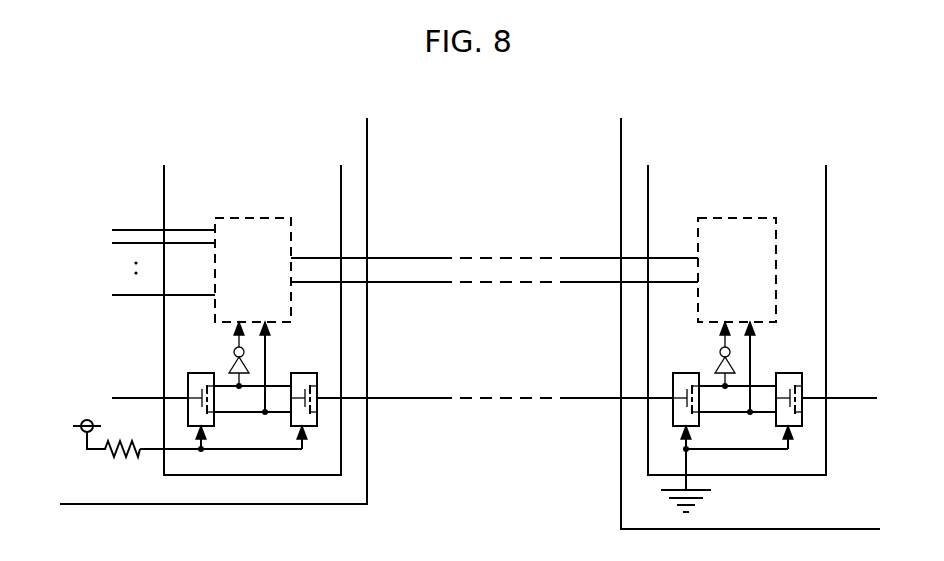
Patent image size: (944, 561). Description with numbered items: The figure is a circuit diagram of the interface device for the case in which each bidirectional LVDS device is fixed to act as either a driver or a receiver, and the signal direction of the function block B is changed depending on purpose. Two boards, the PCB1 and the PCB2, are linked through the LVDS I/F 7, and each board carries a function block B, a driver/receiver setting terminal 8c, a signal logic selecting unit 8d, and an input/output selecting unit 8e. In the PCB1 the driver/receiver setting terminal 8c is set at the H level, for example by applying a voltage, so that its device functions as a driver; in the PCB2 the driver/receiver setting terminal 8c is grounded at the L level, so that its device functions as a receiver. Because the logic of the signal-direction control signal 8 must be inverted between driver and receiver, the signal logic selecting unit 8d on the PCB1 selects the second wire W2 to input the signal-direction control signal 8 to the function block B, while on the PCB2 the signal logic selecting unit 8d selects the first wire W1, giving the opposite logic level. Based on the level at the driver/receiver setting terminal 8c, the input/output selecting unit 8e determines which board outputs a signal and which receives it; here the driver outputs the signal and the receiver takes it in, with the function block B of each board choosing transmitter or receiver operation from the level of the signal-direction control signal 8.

The element PCB1 is at (367, 152).
The element PCB2 is at (621, 156).
The function block B is at (256, 214).
The LVDS I/F 7 is at (528, 257).
The signal-direction control signal 8 is at (486, 398).
The driver/receiver setting terminal 8c is at (144, 450).
The signal logic selecting unit 8d is at (214, 420).
The input/output selecting unit 8e is at (317, 410).
The first wire W1 is at (233, 341).
The second wire W2 is at (266, 366).